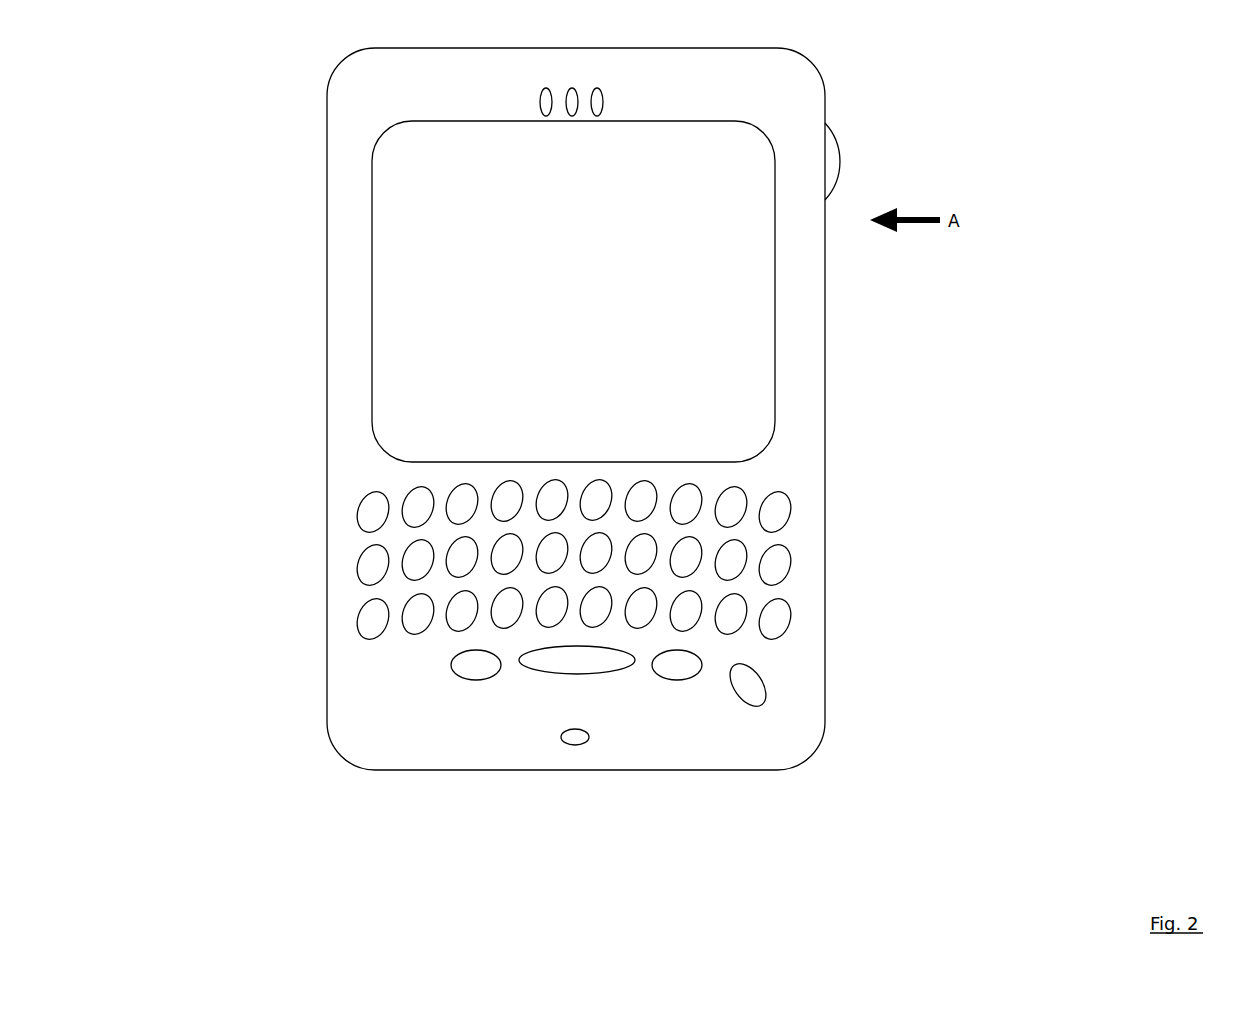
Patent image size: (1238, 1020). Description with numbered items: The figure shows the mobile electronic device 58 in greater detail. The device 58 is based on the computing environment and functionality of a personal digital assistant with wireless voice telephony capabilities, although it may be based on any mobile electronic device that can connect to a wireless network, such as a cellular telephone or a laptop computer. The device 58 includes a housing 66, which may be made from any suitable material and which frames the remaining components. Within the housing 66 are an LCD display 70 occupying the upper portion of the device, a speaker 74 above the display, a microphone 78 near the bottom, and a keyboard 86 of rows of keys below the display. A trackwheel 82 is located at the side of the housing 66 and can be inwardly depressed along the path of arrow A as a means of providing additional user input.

The device 58 is at (183, 826).
The housing 66 is at (326, 533).
The LCD display 70 is at (370, 383).
The speaker 74 is at (534, 95).
The microphone 78 is at (572, 744).
The trackwheel 82 is at (836, 118).
The keyboard 86 is at (374, 614).